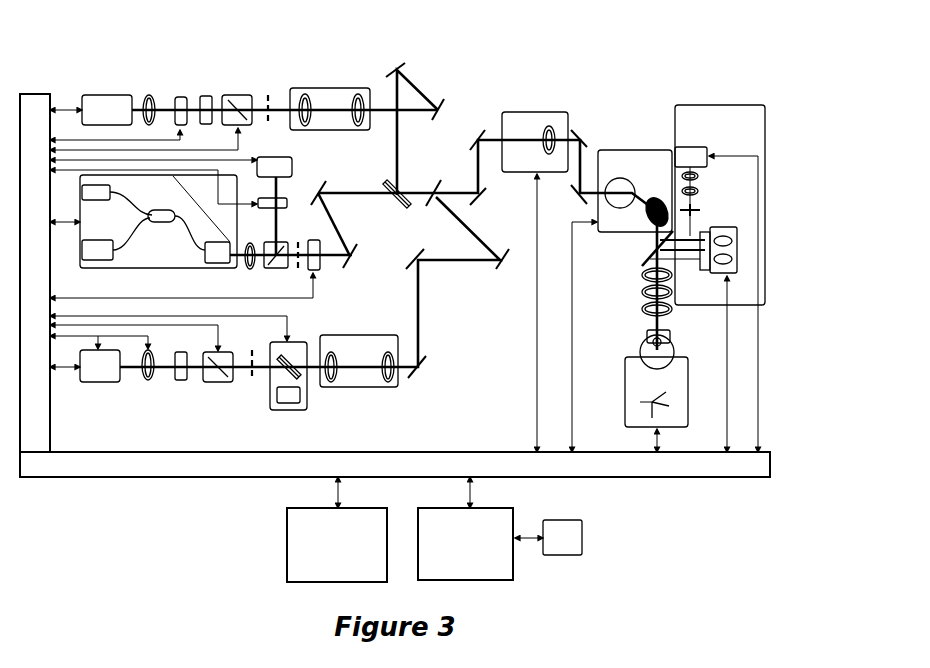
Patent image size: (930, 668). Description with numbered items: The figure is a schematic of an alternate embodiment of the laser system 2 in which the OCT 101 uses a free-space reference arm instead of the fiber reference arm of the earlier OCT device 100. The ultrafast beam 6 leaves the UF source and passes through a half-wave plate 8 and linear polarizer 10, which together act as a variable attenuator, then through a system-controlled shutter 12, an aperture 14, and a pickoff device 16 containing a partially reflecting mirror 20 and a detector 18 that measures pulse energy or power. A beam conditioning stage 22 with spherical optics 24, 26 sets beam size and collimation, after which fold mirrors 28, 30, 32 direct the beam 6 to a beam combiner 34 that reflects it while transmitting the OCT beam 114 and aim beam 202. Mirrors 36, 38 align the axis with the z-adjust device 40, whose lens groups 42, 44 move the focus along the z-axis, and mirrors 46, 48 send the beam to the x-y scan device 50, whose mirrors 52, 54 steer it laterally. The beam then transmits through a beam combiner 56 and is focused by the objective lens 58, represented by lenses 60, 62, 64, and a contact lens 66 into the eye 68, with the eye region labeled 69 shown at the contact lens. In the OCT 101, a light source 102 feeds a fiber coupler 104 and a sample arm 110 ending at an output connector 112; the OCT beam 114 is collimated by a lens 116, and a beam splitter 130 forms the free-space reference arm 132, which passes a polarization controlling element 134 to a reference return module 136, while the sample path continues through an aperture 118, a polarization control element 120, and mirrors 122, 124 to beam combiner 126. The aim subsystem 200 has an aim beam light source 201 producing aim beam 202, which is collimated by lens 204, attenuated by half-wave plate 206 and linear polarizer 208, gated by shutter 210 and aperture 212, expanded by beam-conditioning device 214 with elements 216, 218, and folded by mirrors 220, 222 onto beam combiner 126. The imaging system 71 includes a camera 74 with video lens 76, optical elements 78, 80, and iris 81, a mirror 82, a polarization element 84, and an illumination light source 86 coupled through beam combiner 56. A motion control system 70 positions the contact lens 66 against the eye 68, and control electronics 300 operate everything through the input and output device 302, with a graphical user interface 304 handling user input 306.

The system 2 is at (73, 241).
The UF light beam 6 is at (130, 369).
The half-wave plate 8 is at (148, 377).
The linear polarizer 10 is at (179, 378).
The system-controlled shutter 12 is at (218, 378).
The aperture 14 is at (251, 377).
The pickoff device 16 is at (288, 387).
The detector 18 is at (288, 395).
The partially reflecting mirror 20 is at (291, 362).
The beam conditioning stage 22 is at (359, 371).
The spherical optic 24 is at (335, 361).
The spherical optic 26 is at (384, 361).
The fold mirror 28 is at (424, 370).
The fold mirror 30 is at (407, 259).
The fold mirror 32 is at (509, 264).
The beam combiner 34 is at (435, 185).
The mirror 36 is at (486, 198).
The mirror 38 is at (474, 135).
The z-adjust device 40 is at (535, 133).
The lens group 42 is at (523, 153).
The lens group 44 is at (549, 147).
The mirror 46 is at (585, 135).
The mirror 48 is at (574, 200).
The x-y scan device 50 is at (635, 182).
The mirror 52 is at (629, 190).
The mirror 54 is at (651, 212).
The beam combiner 56 is at (660, 248).
The objective lens 58 is at (597, 293).
The lens 60 is at (645, 275).
The lens 62 is at (645, 292).
The lens 64 is at (645, 309).
The contact lens 66 is at (647, 337).
The eye 68 is at (673, 346).
The eye 69 is at (657, 352).
The motion control system 70 is at (666, 392).
The imaging system 71 is at (720, 205).
The camera 74 is at (691, 150).
The video lens 76 is at (700, 177).
The optical element 78 is at (700, 192).
The optical element 80 is at (700, 209).
The aperture or iris 81 is at (708, 233).
The mirror 82 is at (688, 271).
The polarization element 84 is at (721, 281).
The illumination light source 86 is at (732, 250).
The OCT device 100 is at (96, 192).
The OCT 101 is at (158, 221).
The light source 102 is at (97, 250).
The fiber coupler 104 is at (142, 221).
The sample arm 110 is at (192, 233).
The output connector 112 is at (217, 252).
The OCT beam 114 is at (246, 269).
The lens 116 is at (254, 270).
The aperture 118 is at (300, 243).
The polarization control element 120 is at (320, 270).
The mirror 122 is at (359, 258).
The mirror 124 is at (311, 191).
The beam combiner 126 is at (392, 198).
The beam splitter 130 is at (275, 263).
The reference arm 132 is at (265, 243).
The polarization controlling element 134 is at (264, 196).
The reference return module 136 is at (274, 167).
The aim subsystem 200 is at (107, 102).
The aim beam light source 201 is at (106, 118).
The aim beam 202 is at (145, 95).
The lens 204 is at (148, 133).
The half-wave plate 206 is at (178, 103).
The linear polarizer 208 is at (204, 121).
The system-controlled shutter 210 is at (237, 102).
The aperture 212 is at (268, 121).
The beam-conditioning device 214 is at (330, 117).
The optical element 216 is at (305, 108).
The optical element 218 is at (356, 108).
The fold mirror 220 is at (450, 109).
The fold mirror 222 is at (394, 63).
The control electronics 300 is at (337, 545).
The input and output device 302 is at (395, 464).
The graphical user interface 304 is at (465, 544).
The user input 306 is at (562, 537).